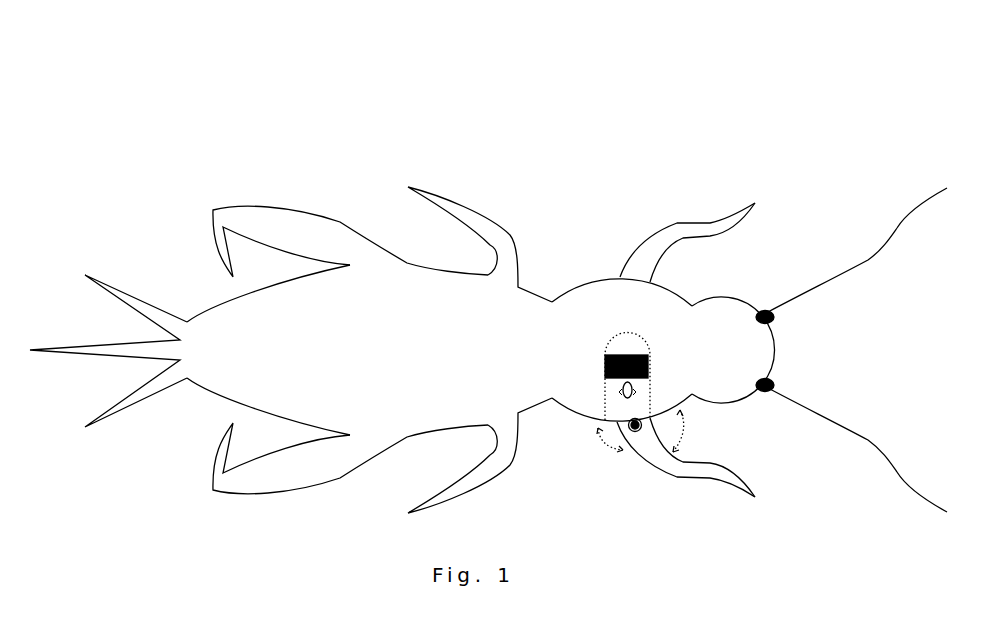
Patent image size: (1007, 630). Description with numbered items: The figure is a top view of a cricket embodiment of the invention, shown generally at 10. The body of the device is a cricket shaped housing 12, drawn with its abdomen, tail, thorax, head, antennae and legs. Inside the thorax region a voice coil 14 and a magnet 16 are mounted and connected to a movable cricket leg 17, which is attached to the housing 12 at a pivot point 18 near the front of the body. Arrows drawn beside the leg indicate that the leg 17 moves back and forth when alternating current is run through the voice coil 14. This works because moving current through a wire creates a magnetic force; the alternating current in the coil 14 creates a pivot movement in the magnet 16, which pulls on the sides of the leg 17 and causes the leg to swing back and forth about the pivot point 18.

The cricket embodiment 10 is at (455, 142).
The cricket shaped housing 12 is at (210, 302).
The voice coil 14 is at (627, 390).
The magnet 16 is at (627, 390).
The movable cricket leg 17 is at (708, 464).
The pivot point 18 is at (631, 400).